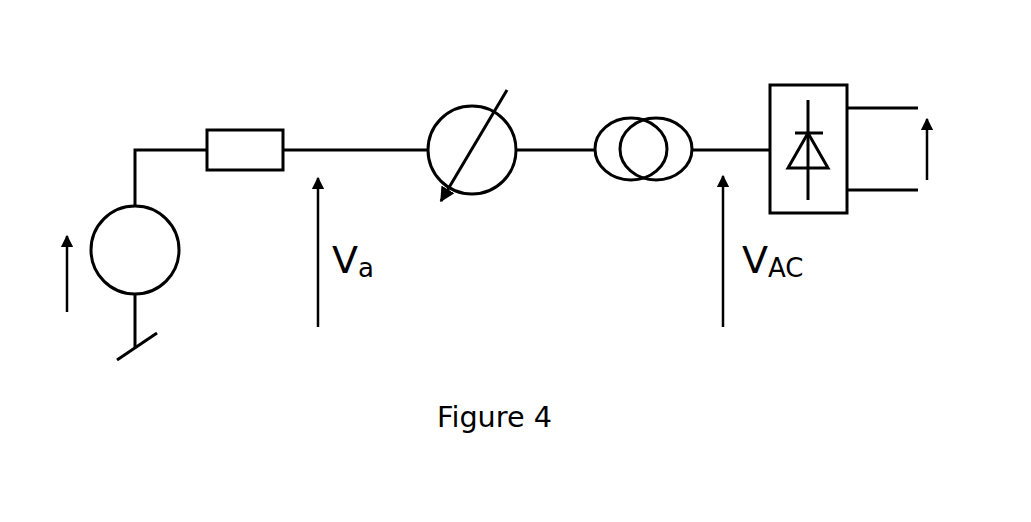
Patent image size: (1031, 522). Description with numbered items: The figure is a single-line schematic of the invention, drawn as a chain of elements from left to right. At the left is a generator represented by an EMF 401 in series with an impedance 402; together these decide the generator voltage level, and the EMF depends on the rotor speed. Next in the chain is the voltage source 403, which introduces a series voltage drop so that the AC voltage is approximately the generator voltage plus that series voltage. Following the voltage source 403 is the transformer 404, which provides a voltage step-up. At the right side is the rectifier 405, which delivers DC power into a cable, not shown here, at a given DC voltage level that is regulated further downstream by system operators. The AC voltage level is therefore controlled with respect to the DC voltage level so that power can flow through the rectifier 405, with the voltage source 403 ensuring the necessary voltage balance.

The EMF 401 is at (109, 211).
The impedance 402 is at (261, 127).
The voltage source 403 is at (447, 111).
The transformer 404 is at (621, 110).
The rectifier 405 is at (798, 80).